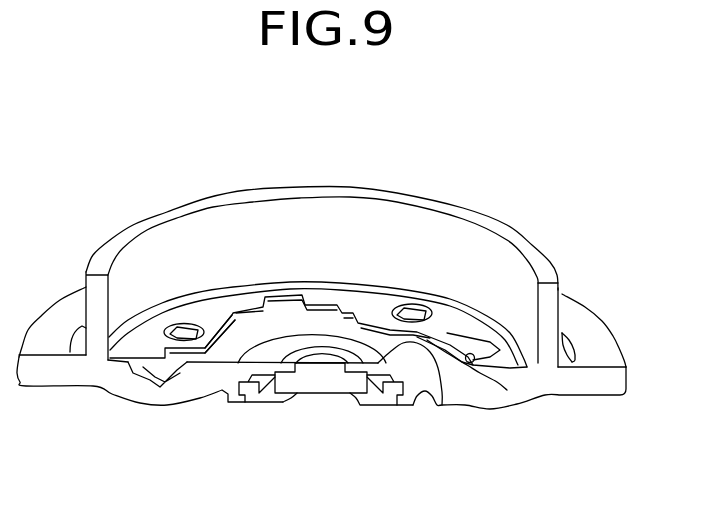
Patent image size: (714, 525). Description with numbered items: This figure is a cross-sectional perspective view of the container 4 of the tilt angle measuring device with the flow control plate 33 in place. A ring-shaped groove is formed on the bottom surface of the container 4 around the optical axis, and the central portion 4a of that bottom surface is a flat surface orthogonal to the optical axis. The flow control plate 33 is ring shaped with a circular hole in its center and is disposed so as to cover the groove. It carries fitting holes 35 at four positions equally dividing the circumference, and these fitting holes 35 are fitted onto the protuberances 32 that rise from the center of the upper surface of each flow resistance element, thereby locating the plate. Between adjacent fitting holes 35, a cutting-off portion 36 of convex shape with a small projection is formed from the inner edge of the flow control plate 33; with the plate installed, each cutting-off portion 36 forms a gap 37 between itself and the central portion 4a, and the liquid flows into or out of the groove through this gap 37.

The container 4 is at (553, 257).
The central portion 4a is at (427, 326).
The protuberance 32 is at (418, 297).
The flow control plate 33 is at (449, 319).
The fitting hole 35 is at (170, 323).
The cutting-off portion 36 is at (250, 305).
The gap 37 is at (287, 313).